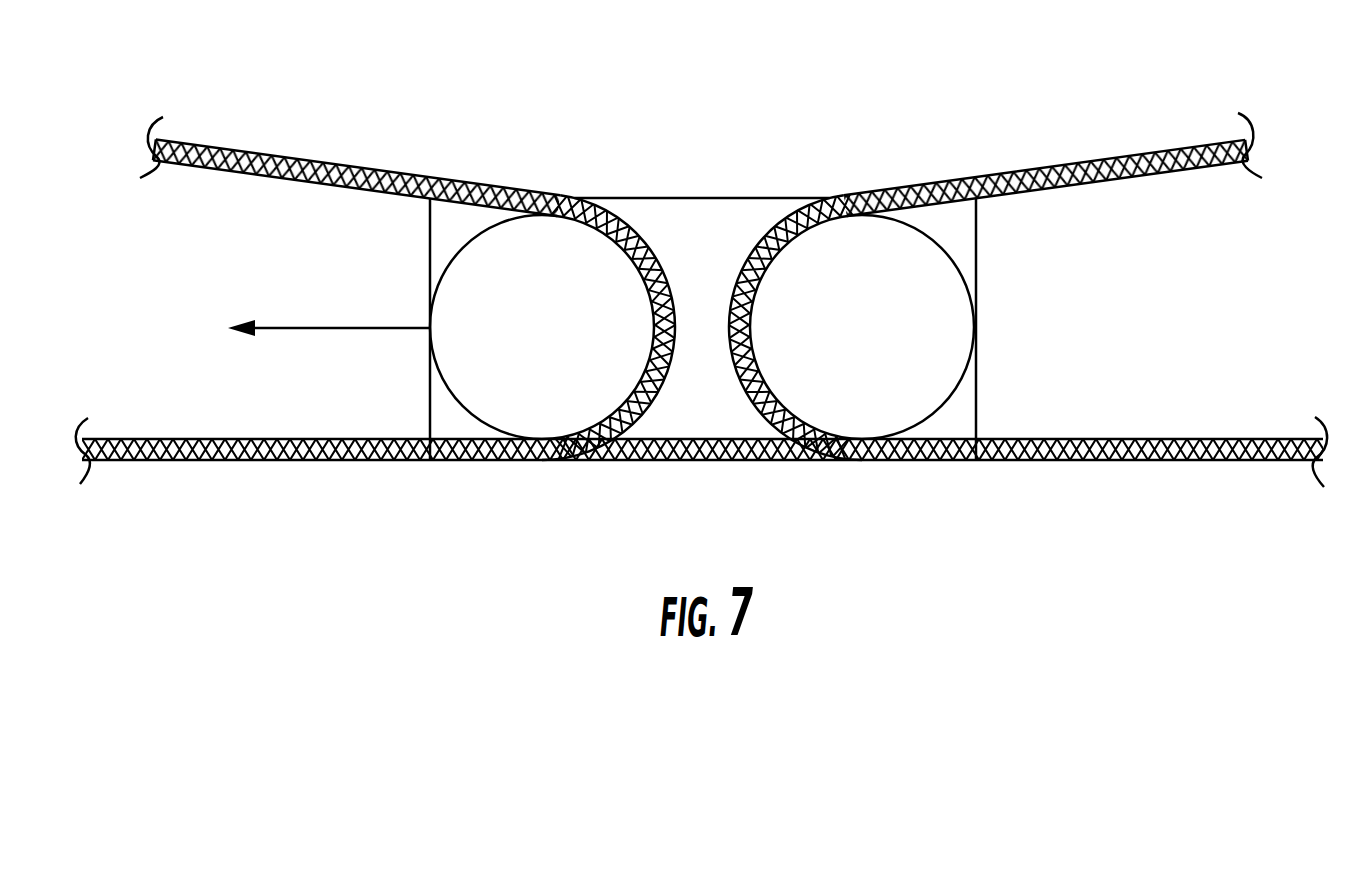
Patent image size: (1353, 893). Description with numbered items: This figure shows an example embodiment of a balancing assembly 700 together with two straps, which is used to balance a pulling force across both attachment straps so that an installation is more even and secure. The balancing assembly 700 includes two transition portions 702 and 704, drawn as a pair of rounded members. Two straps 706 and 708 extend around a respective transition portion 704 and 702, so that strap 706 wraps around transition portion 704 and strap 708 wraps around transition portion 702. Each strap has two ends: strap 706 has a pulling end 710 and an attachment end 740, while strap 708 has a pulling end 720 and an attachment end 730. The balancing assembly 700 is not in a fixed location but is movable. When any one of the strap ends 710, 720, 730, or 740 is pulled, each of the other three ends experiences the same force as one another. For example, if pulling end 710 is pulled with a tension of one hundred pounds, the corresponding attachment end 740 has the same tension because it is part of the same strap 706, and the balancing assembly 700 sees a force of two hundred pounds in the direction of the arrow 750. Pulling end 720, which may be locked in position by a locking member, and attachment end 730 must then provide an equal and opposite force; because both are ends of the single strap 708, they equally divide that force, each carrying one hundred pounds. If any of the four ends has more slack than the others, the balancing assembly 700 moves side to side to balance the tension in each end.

The balancing assembly 700 is at (668, 462).
The transition portion 702 is at (960, 268).
The transition portion 704 is at (437, 286).
The strap 706 is at (513, 189).
The strap 708 is at (934, 183).
The pulling end 710 is at (113, 463).
The pulling end 720 is at (1268, 462).
The attachment end 730 is at (1200, 145).
The attachment end 740 is at (168, 141).
The arrow 750 is at (329, 348).